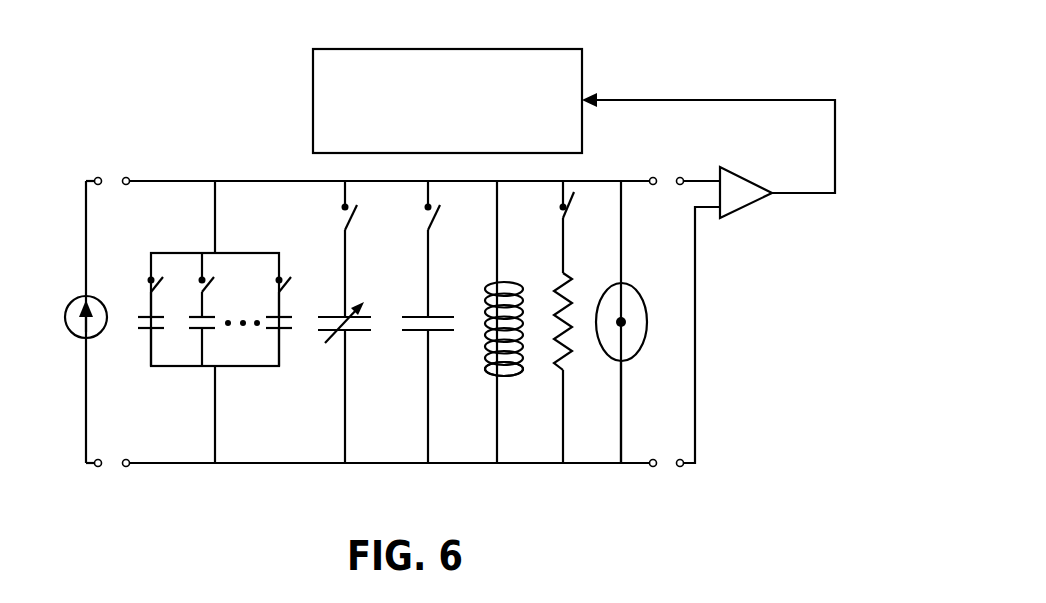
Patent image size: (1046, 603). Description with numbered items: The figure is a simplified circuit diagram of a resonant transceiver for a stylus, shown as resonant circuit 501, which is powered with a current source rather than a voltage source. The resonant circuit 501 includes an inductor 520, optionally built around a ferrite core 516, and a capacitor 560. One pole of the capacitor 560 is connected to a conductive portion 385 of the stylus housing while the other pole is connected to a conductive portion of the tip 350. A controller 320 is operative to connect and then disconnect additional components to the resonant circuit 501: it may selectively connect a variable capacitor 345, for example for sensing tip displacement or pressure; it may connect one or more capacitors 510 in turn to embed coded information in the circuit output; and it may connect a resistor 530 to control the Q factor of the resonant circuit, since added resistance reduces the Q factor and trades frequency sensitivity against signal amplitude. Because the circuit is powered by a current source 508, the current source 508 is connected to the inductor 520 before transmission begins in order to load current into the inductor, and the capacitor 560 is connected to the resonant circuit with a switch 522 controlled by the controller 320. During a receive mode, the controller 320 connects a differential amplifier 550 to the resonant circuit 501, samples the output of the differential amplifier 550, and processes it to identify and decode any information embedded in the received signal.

The resonant circuit 501 is at (193, 90).
The controller 320 is at (425, 49).
The current source 508 is at (66, 310).
The capacitors 510 is at (172, 253).
The variable capacitor 345 is at (363, 333).
The capacitor 560 is at (445, 333).
The switch 522 is at (425, 218).
The ferrite core 516 is at (497, 283).
The inductor 520 is at (500, 380).
The resistor 530 is at (575, 300).
The tip 350 is at (626, 318).
The conductive portion of stylus housing 385 is at (624, 364).
The differential amplifier 550 is at (745, 210).